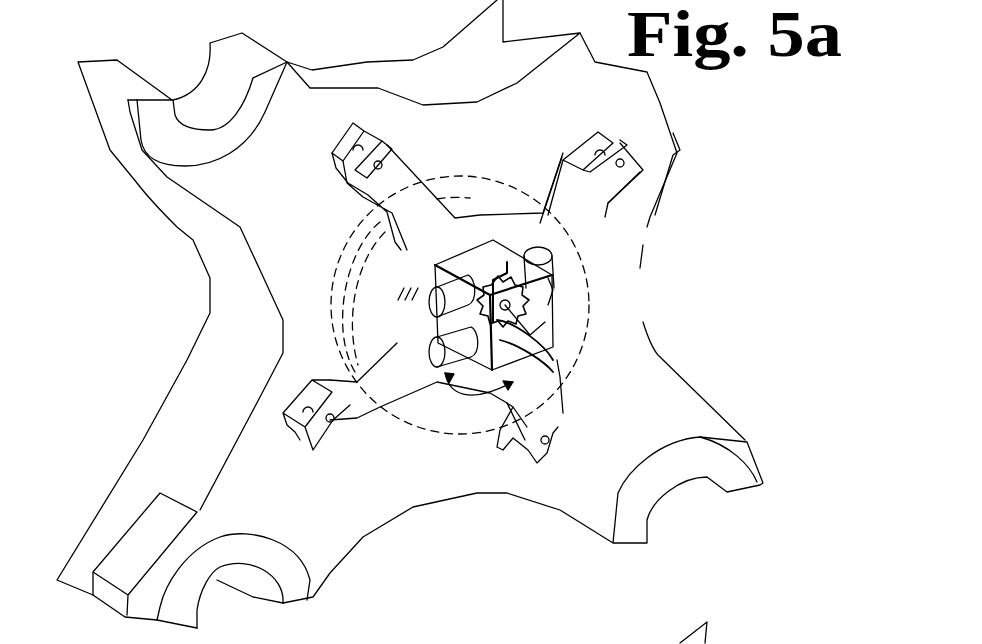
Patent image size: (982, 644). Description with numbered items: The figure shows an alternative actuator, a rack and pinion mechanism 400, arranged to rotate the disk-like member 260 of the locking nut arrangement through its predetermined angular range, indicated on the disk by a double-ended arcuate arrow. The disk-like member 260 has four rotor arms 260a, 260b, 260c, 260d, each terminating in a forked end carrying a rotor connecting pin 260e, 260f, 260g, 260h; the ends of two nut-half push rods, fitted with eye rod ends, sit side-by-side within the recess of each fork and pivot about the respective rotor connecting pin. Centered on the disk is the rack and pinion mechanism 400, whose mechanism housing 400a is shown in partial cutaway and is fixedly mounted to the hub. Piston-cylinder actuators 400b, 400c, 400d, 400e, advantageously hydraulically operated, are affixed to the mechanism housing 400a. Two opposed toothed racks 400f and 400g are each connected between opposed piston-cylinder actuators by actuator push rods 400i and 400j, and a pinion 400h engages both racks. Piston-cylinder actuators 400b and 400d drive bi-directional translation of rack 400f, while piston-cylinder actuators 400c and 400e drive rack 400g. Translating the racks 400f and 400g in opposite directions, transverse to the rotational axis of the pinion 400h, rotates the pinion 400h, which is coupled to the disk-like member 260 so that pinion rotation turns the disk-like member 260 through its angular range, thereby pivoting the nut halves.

The disk-like member 260 is at (553, 402).
The rotor arm 260a is at (602, 137).
The rotor arm 260b is at (347, 143).
The rotor arm 260c is at (293, 445).
The rotor arm 260d is at (537, 450).
The rotor connecting pin 260e is at (622, 160).
The rotor connecting pin 260f is at (374, 165).
The rotor connecting pin 260g is at (331, 423).
The rotor connecting pin 260h is at (546, 435).
The rack and pinion mechanism 400 is at (503, 278).
The mechanism housing 400a is at (493, 258).
The piston-cylinder actuator 400b is at (545, 255).
The piston-cylinder actuator 400c is at (560, 285).
The piston-cylinder actuator 400d is at (430, 303).
The piston-cylinder actuator 400e is at (437, 345).
The toothed rack 400f is at (550, 303).
The toothed rack 400g is at (540, 357).
The pinion 400h is at (553, 343).
The actuator push rod 400i is at (553, 267).
The actuator push rod 400j is at (563, 313).